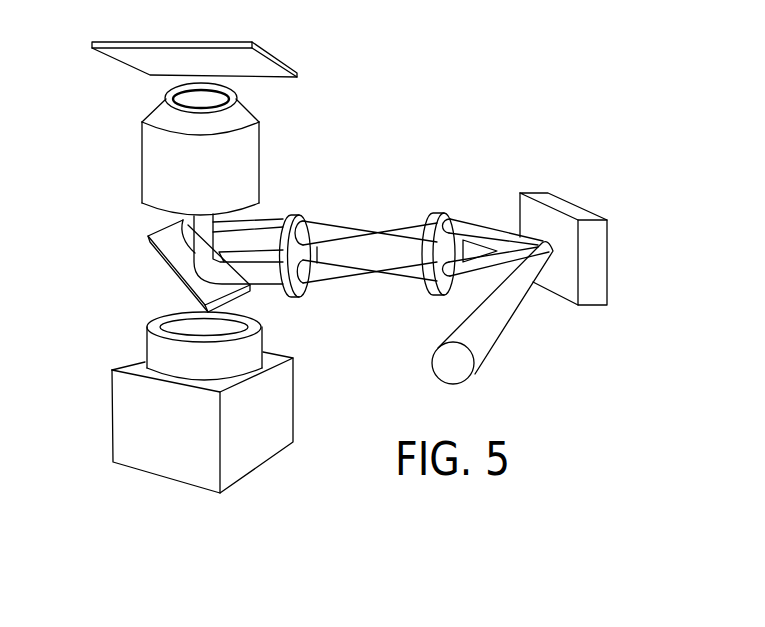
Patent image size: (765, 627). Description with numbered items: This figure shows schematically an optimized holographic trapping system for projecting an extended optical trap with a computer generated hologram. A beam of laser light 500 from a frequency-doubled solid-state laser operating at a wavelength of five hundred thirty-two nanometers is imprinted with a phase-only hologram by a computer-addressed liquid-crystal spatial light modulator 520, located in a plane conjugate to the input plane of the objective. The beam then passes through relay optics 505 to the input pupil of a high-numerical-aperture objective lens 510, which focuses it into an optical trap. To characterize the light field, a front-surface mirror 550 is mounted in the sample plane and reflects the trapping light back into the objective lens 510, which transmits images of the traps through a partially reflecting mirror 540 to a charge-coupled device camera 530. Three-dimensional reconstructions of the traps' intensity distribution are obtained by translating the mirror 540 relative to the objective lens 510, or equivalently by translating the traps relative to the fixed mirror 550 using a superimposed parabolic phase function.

The beam of laser light 500 is at (490, 322).
The relay optics 505 is at (433, 300).
The objective lens 510 is at (158, 167).
The spatial light modulator 520 is at (596, 268).
The charge-coupled device camera 530 is at (167, 355).
The partially reflecting mirror 540 is at (187, 262).
The mirror 550 is at (253, 65).